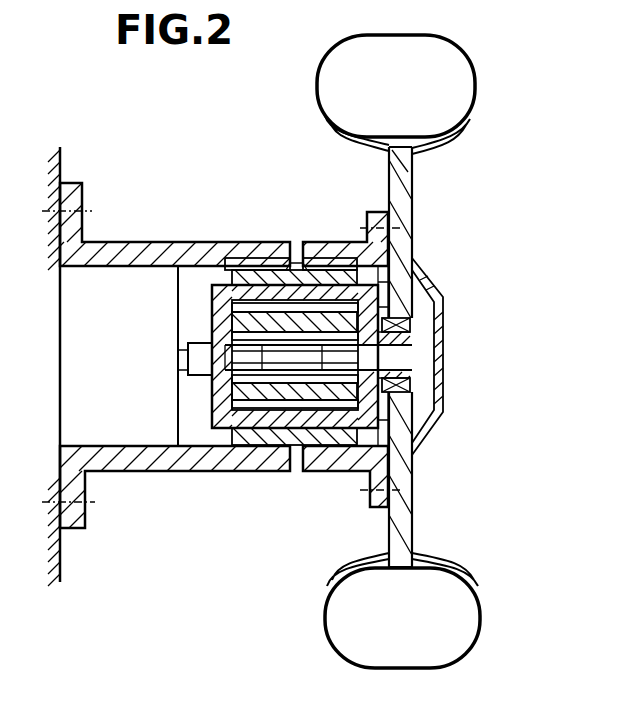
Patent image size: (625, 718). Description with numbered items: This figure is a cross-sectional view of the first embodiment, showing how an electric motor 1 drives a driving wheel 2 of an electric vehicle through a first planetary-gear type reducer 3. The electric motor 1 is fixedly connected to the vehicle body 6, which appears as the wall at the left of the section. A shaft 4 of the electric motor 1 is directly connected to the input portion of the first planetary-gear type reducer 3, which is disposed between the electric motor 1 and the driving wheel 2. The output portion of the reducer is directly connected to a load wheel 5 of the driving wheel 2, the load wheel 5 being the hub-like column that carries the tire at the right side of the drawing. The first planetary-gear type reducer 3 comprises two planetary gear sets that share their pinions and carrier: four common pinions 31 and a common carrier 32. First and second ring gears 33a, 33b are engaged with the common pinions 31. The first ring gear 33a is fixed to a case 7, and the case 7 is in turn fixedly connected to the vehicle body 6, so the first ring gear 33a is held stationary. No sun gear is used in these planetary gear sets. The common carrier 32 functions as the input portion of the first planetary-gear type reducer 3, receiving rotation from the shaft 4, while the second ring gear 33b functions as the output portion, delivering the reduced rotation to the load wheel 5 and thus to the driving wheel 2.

The electric motor 1 is at (116, 290).
The driving wheel 2 is at (488, 93).
The first planetary-gear type reducer 3 is at (281, 228).
The shaft 4 is at (183, 358).
The load wheel 5 is at (412, 200).
The vehicle body 6 is at (64, 330).
The case 7 is at (160, 243).
The common pinions 31 is at (355, 278).
The common carrier 32 is at (380, 372).
The first ring gear 33a is at (228, 243).
The second ring gear 33b is at (330, 243).